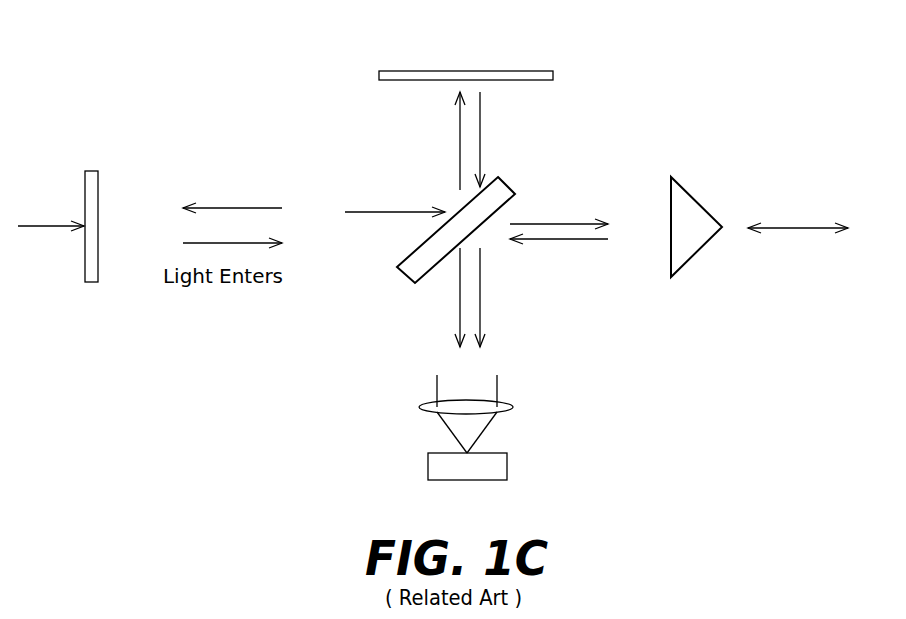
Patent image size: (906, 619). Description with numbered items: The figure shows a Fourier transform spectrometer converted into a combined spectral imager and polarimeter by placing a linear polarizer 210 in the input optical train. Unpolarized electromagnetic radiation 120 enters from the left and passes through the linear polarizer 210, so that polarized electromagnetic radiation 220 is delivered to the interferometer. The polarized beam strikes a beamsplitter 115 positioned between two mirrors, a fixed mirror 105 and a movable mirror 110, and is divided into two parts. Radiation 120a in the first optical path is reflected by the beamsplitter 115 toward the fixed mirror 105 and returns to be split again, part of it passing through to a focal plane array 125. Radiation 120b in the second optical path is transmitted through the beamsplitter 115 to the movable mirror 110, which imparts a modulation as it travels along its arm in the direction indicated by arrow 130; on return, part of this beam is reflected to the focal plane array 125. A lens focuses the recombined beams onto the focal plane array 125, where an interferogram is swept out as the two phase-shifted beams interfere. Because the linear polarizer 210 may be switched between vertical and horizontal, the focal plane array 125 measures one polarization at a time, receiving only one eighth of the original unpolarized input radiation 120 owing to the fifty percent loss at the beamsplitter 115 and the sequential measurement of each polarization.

The fixed mirror 105 is at (553, 71).
The movable mirror 110 is at (703, 205).
The beamsplitter 115 is at (503, 187).
The electromagnetic radiation 120 is at (47, 226).
The radiation in first optical path 120a is at (437, 140).
The radiation in second optical path 120b is at (558, 250).
The focal plane array 125 is at (507, 453).
The arrow indicating mirror motion 130 is at (795, 228).
The linear polarizer 210 is at (93, 171).
The polarized electromagnetic radiation 220 is at (240, 208).